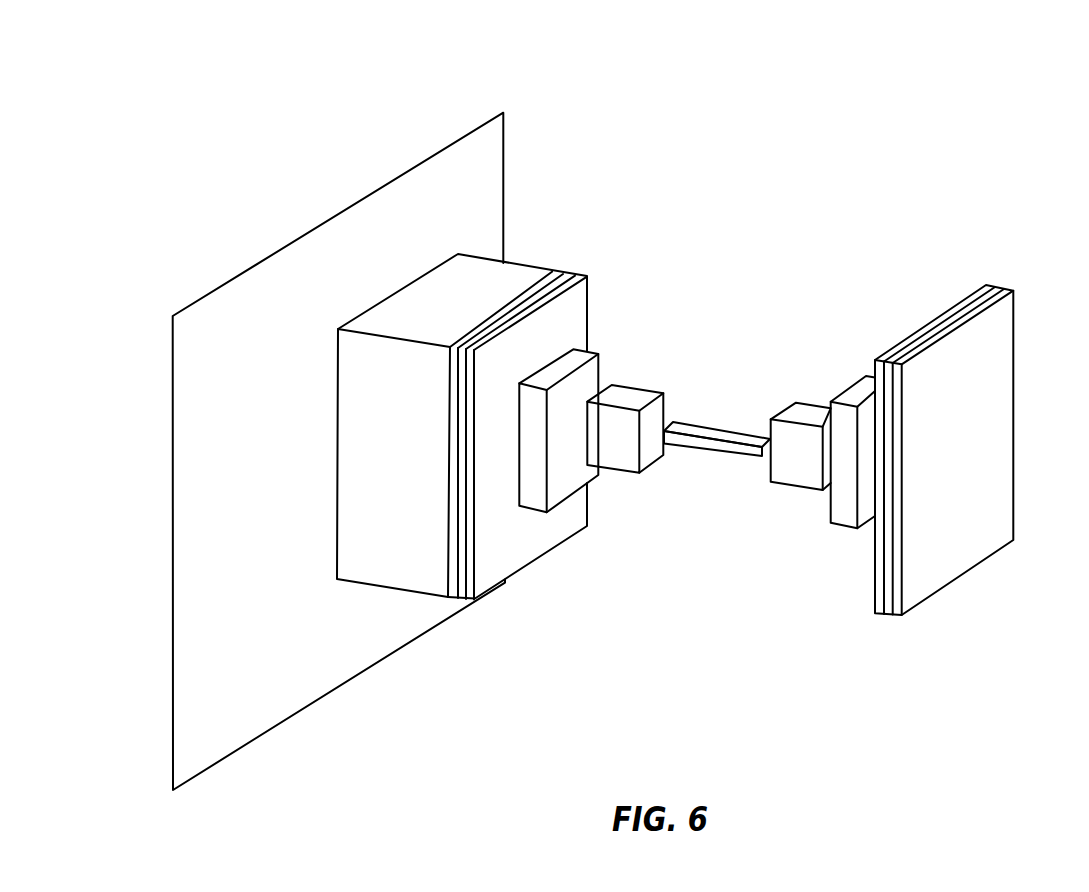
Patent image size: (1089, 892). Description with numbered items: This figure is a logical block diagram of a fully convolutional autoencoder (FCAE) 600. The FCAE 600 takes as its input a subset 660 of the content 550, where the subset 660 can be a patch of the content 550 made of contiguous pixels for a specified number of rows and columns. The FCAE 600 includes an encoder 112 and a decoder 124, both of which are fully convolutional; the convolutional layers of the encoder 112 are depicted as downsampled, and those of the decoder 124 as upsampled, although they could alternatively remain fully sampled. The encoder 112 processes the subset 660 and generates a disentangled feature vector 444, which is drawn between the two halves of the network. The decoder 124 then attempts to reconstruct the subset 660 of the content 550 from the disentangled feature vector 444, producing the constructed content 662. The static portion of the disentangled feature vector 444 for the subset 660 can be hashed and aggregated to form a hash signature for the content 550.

The fully convolutional autoencoder 600 is at (990, 93).
The content 550 is at (494, 122).
The subset of the content 660 is at (556, 243).
The encoder 112 is at (556, 243).
The disentangled feature vector 444 is at (700, 428).
The decoder 124 is at (1023, 277).
The constructed content 662 is at (1013, 381).